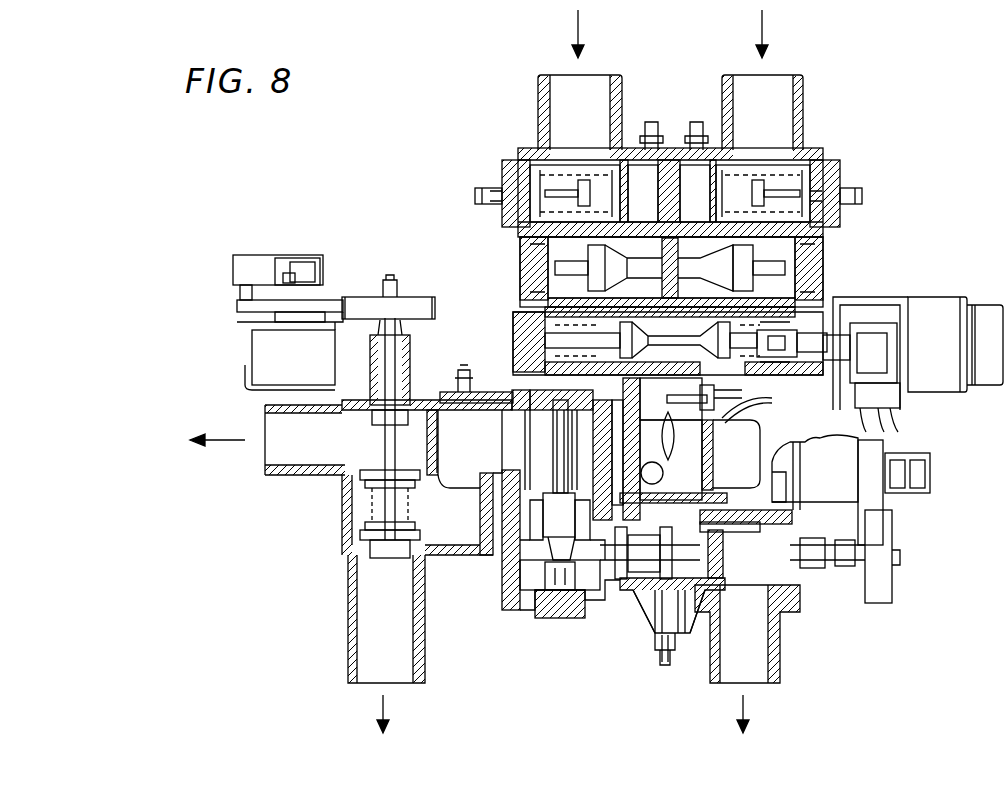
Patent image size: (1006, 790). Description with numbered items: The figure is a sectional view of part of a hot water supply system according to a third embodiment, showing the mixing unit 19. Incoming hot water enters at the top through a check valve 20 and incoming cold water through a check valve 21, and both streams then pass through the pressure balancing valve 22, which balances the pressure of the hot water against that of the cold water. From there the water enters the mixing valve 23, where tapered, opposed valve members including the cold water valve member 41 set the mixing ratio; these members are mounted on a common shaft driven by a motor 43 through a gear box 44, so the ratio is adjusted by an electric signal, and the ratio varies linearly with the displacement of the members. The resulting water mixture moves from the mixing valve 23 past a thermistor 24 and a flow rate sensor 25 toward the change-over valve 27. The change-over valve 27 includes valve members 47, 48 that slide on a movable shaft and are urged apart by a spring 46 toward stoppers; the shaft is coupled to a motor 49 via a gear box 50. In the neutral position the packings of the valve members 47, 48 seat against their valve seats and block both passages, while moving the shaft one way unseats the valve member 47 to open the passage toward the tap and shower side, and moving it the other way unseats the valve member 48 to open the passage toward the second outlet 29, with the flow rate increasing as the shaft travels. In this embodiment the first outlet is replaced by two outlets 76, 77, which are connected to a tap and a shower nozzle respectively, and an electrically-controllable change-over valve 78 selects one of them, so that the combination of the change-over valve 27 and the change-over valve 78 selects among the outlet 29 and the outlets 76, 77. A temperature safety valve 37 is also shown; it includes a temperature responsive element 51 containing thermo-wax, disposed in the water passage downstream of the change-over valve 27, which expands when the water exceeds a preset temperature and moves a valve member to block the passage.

The mixing unit 19 is at (405, 230).
The check valve 20 is at (562, 182).
The check valve 21 is at (773, 201).
The pressure balancing valve 22 is at (778, 256).
The mixing valve 23 is at (613, 330).
The thermistor 24 is at (657, 395).
The flow rate sensor 25 is at (692, 448).
The change-over valve 27 is at (665, 590).
The second outlet 29 is at (755, 678).
The temperature safety valve 37 is at (527, 549).
The cold water valve member 41 is at (742, 356).
The motor 43 is at (982, 388).
The gear box 44 is at (932, 303).
The spring 46 is at (660, 580).
The valve member 47 is at (680, 582).
The valve member 48 is at (630, 590).
The motor 49 is at (787, 497).
The gear box 50 is at (830, 470).
The temperature responsive element 51 is at (558, 437).
The outlet 76 is at (392, 676).
The outlet 77 is at (265, 432).
The change-over valve 78 is at (356, 513).